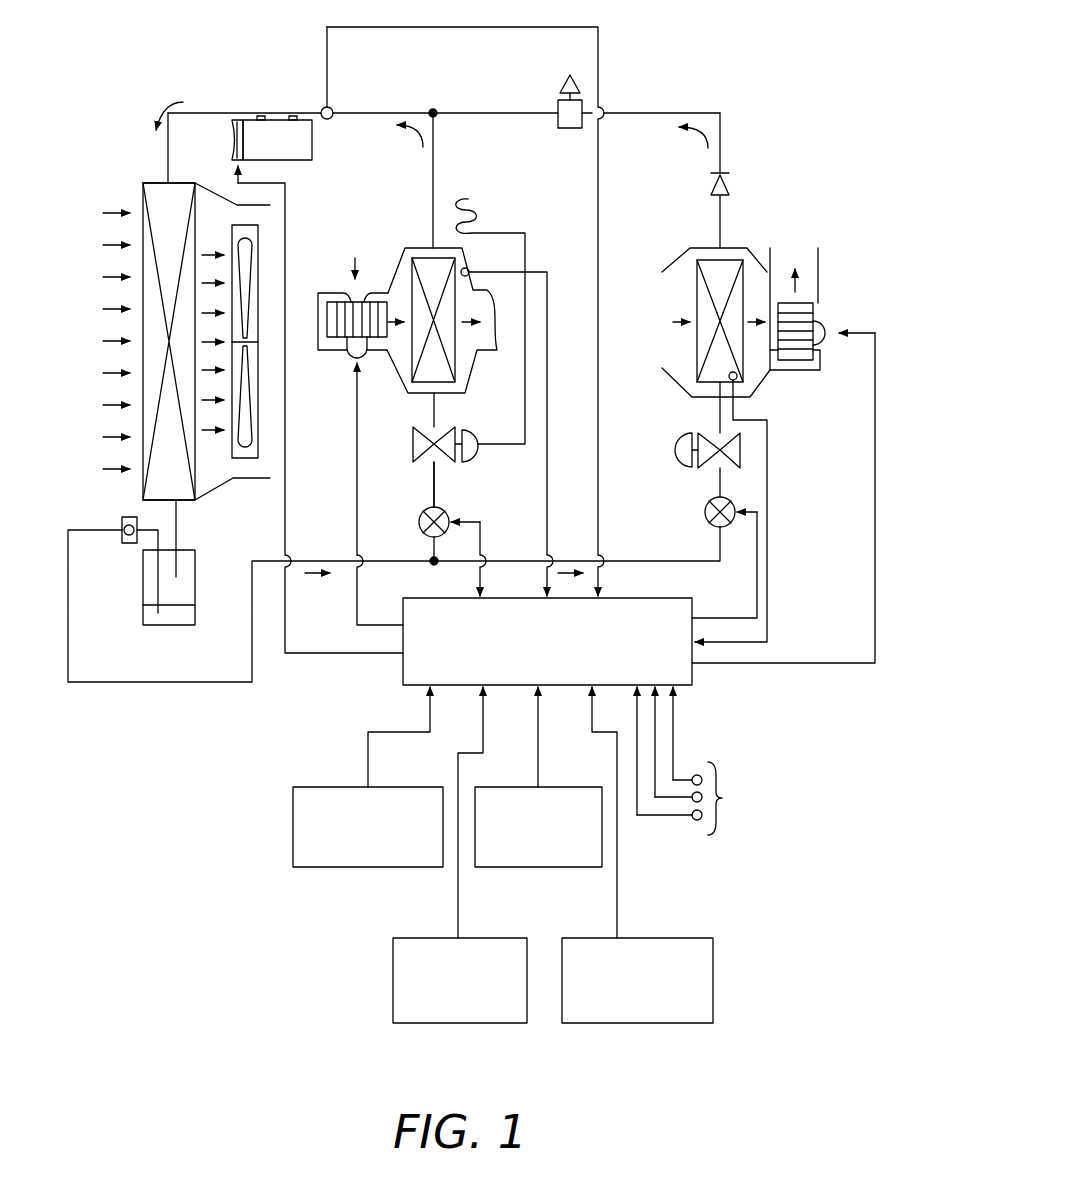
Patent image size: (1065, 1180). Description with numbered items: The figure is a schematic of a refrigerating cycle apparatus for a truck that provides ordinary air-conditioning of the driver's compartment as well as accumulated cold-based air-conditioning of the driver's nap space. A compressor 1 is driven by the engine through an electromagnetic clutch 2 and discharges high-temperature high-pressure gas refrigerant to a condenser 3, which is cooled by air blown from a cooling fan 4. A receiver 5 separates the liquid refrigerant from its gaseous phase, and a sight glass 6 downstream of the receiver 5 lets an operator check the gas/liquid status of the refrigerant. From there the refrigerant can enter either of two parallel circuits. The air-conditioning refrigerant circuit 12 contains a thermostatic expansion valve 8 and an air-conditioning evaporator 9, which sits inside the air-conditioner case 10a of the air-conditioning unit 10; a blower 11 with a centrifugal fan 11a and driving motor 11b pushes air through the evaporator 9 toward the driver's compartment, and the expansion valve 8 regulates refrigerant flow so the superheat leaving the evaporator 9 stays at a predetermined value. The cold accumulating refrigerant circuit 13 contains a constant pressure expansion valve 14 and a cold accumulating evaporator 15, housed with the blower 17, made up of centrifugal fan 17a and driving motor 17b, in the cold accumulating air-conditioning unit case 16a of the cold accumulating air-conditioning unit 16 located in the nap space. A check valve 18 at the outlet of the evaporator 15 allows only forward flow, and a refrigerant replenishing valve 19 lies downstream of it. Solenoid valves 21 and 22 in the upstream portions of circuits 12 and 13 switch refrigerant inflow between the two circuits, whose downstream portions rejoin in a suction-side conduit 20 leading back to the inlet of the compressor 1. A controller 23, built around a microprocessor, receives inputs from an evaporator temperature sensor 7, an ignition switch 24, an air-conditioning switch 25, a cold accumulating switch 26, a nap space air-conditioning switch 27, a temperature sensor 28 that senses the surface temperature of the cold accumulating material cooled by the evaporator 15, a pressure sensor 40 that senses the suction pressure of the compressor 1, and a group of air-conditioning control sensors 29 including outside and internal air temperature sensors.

The compressor 1 is at (275, 118).
The electromagnetic clutch 2 is at (231, 136).
The condenser 3 is at (150, 185).
The cooling fan 4 is at (245, 460).
The receiver 5 is at (148, 588).
The sight glass 6 is at (124, 545).
The evaporator temperature sensor 7 is at (470, 270).
The thermostatic expansion valve 8 is at (420, 463).
The air-conditioning evaporator 9 is at (452, 355).
The air-conditioning unit 10 is at (426, 279).
The air-conditioner case 10a is at (399, 257).
The blower 11 is at (336, 349).
The centrifugal fan 11a is at (330, 296).
The driving motor 11b is at (317, 340).
The air-conditioning refrigerant circuit 12 is at (437, 490).
The cold accumulating refrigerant circuit 13 is at (718, 488).
The constant pressure expansion valve 14 is at (707, 432).
The cold accumulating evaporator 15 is at (697, 300).
The cold accumulating air-conditioning unit 16 is at (744, 365).
The cold accumulating air-conditioning unit case 16a is at (760, 388).
The blower 17 is at (849, 320).
The centrifugal fan 17a is at (820, 360).
The driving motor 17b is at (834, 320).
The check valve 18 is at (728, 185).
The refrigerant replenishing valve 19 is at (557, 110).
The suction-side conduit 20 is at (400, 111).
The solenoid valve 21 is at (419, 522).
The solenoid valve 22 is at (705, 520).
The controller 23 is at (403, 675).
The ignition switch 24 is at (340, 787).
The air-conditioning switch 25 is at (445, 938).
The cold accumulating switch 26 is at (555, 787).
The nap space air-conditioning switch 27 is at (660, 938).
The temperature sensor 28 is at (729, 374).
The group of air-conditioning control sensors 29 is at (703, 761).
The pressure sensor 40 is at (333, 110).